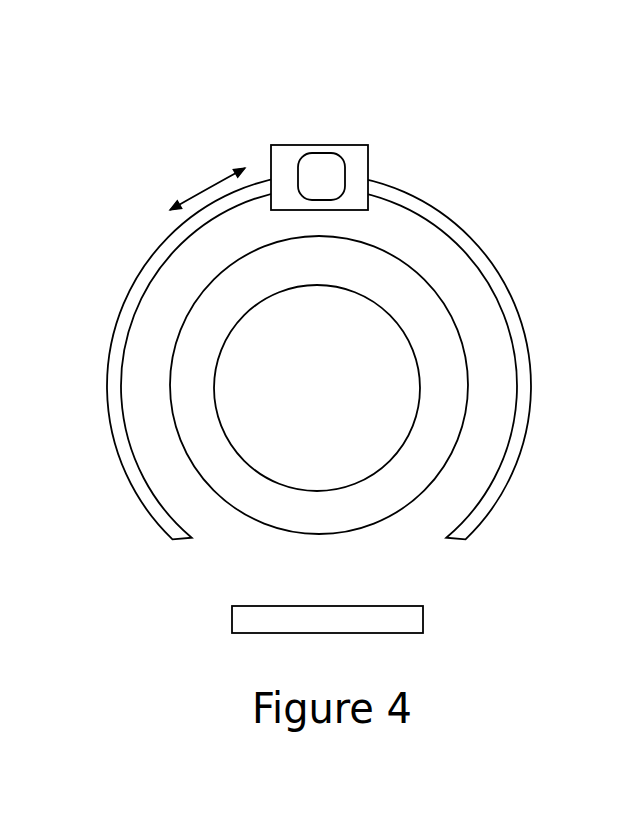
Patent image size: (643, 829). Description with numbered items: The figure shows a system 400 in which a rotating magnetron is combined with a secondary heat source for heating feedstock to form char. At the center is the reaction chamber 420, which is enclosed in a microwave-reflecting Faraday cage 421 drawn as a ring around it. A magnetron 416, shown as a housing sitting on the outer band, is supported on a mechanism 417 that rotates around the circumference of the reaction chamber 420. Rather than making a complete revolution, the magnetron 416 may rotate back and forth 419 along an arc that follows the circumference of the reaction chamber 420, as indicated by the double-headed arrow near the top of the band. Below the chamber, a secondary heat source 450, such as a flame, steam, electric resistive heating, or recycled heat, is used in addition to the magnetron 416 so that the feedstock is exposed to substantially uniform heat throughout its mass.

The ring assembly 400 is at (326, 82).
The magnetron 416 is at (317, 173).
The mechanism 417 is at (523, 383).
The rotate back and forth 419 is at (213, 180).
The reaction chamber 420 is at (378, 292).
The microwave-reflecting Faraday cage 421 is at (448, 317).
The secondary heat source 450 is at (418, 613).